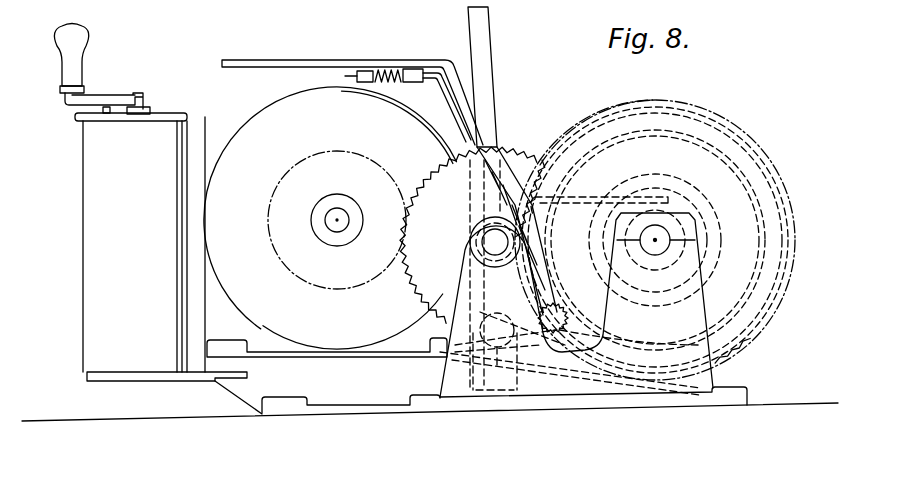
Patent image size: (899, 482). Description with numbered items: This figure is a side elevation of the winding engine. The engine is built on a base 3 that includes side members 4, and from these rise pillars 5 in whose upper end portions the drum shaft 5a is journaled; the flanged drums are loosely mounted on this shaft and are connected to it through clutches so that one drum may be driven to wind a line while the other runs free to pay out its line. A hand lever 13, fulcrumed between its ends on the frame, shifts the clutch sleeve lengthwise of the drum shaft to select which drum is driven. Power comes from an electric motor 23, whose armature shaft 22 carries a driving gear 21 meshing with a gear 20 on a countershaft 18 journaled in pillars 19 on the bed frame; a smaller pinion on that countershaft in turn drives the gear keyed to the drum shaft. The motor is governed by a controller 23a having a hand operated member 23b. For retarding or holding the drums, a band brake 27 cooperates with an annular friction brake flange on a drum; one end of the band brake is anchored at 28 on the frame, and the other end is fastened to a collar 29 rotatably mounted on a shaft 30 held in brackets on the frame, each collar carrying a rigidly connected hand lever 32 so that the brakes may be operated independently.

The base 3 is at (495, 407).
The side members 4 is at (610, 388).
The pillars 5 is at (700, 305).
The drum shaft 5a is at (655, 238).
The hand lever 13 is at (330, 62).
The countershaft 18 is at (495, 242).
The pillars 19 is at (432, 355).
The gear 20 is at (413, 287).
The driving gear 21 is at (377, 169).
The armature shaft 22 is at (337, 224).
The electric motor 23 is at (250, 126).
The controller 23a is at (168, 263).
The hand operated member 23b is at (80, 61).
The band brake 27 is at (612, 141).
The anchor 28 is at (562, 316).
The collars 29 is at (477, 357).
The shaft 30 is at (497, 357).
The hand lever 32 is at (492, 62).